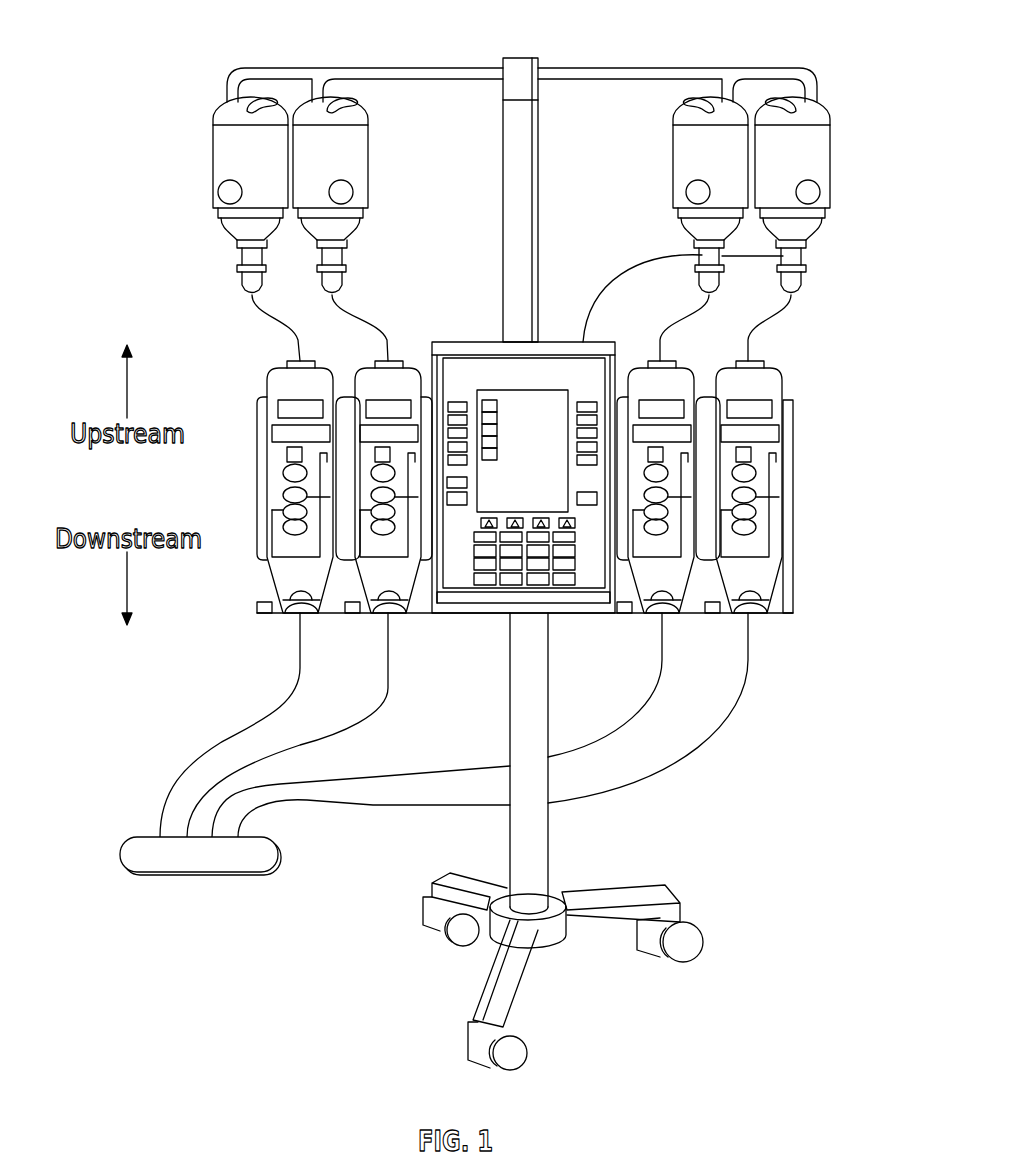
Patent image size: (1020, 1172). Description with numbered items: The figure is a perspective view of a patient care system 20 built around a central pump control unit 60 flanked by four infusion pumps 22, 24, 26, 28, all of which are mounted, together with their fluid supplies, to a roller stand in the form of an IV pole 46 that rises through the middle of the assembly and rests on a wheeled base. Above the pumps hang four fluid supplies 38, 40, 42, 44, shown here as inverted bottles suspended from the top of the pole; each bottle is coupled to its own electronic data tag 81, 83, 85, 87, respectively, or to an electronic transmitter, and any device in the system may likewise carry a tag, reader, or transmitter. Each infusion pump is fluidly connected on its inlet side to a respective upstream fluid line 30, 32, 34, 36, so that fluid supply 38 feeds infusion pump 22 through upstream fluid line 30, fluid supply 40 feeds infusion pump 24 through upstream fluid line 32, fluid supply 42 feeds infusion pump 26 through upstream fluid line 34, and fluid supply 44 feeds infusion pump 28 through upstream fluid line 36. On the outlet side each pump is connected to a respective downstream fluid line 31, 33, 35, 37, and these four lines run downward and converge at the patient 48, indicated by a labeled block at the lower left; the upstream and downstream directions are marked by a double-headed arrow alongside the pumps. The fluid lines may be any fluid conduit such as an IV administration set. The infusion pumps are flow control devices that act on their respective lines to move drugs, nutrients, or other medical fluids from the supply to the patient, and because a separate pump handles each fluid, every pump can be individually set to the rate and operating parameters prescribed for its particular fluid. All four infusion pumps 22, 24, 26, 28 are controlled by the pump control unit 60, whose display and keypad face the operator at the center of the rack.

The patient care system 20 is at (203, 46).
The infusion pump 22 is at (783, 368).
The infusion pump 24 is at (642, 365).
The infusion pump 26 is at (372, 367).
The infusion pump 28 is at (275, 367).
The upstream fluid line 30 is at (793, 303).
The downstream fluid line 31 is at (750, 653).
The upstream fluid line 32 is at (710, 307).
The downstream fluid line 33 is at (658, 665).
The upstream fluid line 34 is at (347, 317).
The downstream fluid line 35 is at (373, 698).
The upstream fluid line 36 is at (237, 303).
The downstream fluid line 37 is at (293, 682).
The fluid supply 38 is at (832, 152).
The fluid supply 40 is at (670, 152).
The fluid supply 42 is at (372, 150).
The fluid supply 44 is at (212, 152).
The IV pole 46 is at (548, 840).
The patient 48 is at (117, 853).
The pump control unit 60 is at (497, 342).
The electronic data tag 81 is at (832, 192).
The electronic data tag 83 is at (685, 193).
The electronic data tag 85 is at (355, 192).
The electronic data tag 87 is at (213, 193).